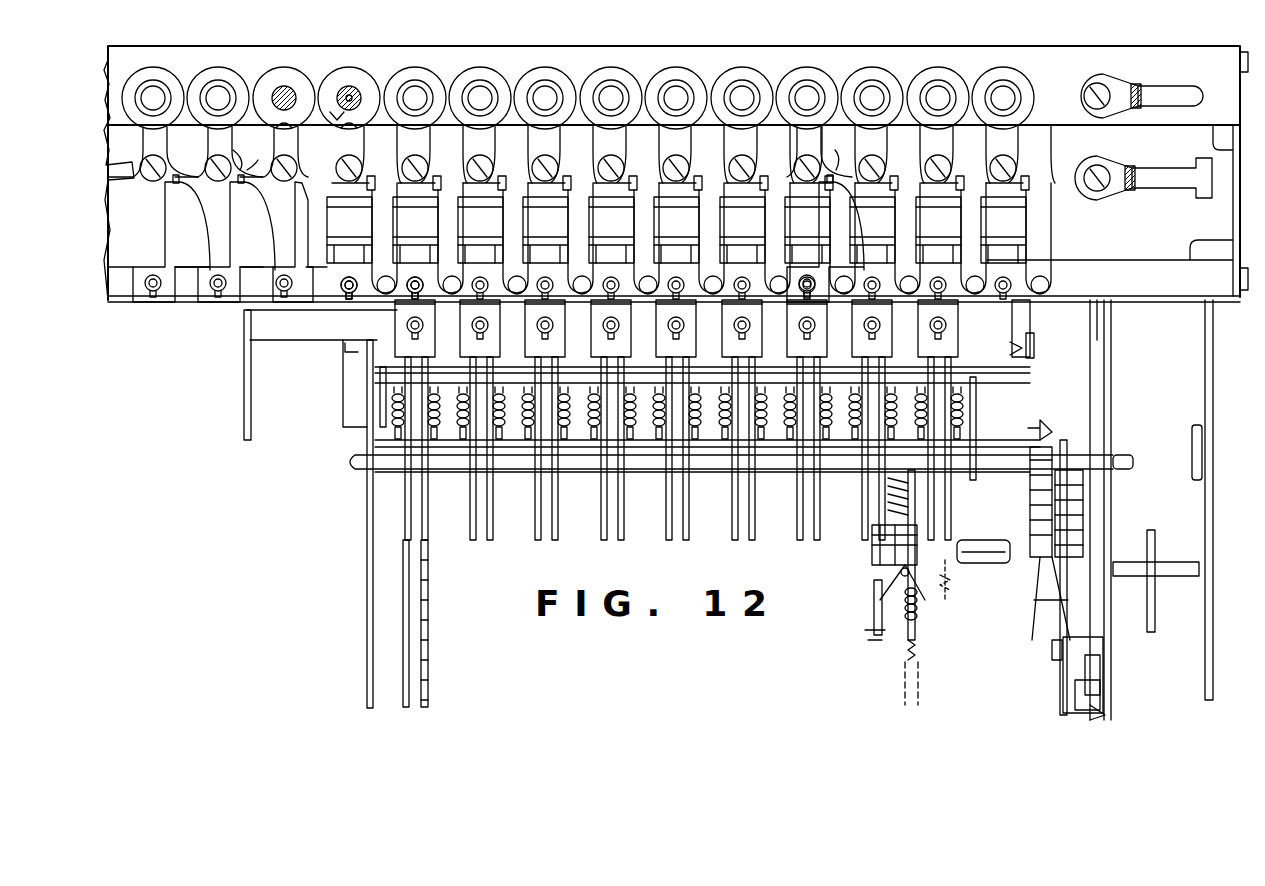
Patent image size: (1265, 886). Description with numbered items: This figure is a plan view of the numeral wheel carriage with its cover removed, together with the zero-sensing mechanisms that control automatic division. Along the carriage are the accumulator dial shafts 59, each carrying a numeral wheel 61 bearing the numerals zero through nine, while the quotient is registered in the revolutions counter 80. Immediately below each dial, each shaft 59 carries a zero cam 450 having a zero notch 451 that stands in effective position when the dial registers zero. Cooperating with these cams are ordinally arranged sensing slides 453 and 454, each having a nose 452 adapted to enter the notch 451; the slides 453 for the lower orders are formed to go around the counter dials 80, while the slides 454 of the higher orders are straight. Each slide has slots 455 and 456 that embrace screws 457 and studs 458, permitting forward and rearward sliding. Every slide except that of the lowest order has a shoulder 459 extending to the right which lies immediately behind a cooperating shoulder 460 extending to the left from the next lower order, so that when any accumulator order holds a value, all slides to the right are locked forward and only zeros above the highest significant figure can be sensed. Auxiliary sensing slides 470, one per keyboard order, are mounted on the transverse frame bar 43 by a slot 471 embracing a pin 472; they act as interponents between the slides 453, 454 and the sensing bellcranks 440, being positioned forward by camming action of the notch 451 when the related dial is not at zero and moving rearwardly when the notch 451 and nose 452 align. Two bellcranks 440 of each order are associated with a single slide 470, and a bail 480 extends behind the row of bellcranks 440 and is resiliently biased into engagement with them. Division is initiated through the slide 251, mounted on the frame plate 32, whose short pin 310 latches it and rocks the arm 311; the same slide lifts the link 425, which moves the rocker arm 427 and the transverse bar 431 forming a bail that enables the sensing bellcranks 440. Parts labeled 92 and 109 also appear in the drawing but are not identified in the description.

The frame plate 32 is at (1227, 368).
The transverse frame bar 43 is at (1097, 330).
The accumulator dial shaft 59 is at (940, 98).
The numeral wheel 61 is at (1050, 70).
The revolutions counter 80 is at (1042, 226).
The frame plate 92 is at (1108, 369).
The indicator digits 109 is at (842, 332).
The slide 251 is at (1200, 513).
The pin 310 is at (1185, 567).
The arm 311 is at (1150, 617).
The link 425 is at (1063, 598).
The rocker arm 427 is at (1043, 430).
The transverse bar 431 is at (1037, 375).
The sensing bellcrank 440 is at (687, 380).
The zero cam 450 is at (356, 82).
The zero notch 451 is at (337, 118).
The nose 452 is at (355, 130).
The sensing slide 453 is at (325, 210).
The sensing slide 454 is at (287, 213).
The slot 455 is at (425, 180).
The slot 456 is at (413, 290).
The screw 457 is at (493, 180).
The stud 458 is at (343, 288).
The shoulder 459 is at (838, 165).
The shoulder 460 is at (818, 176).
The auxiliary sensing slide 470 is at (1013, 344).
The slot 471 is at (960, 322).
The pin 472 is at (867, 330).
The bail 480 is at (973, 380).